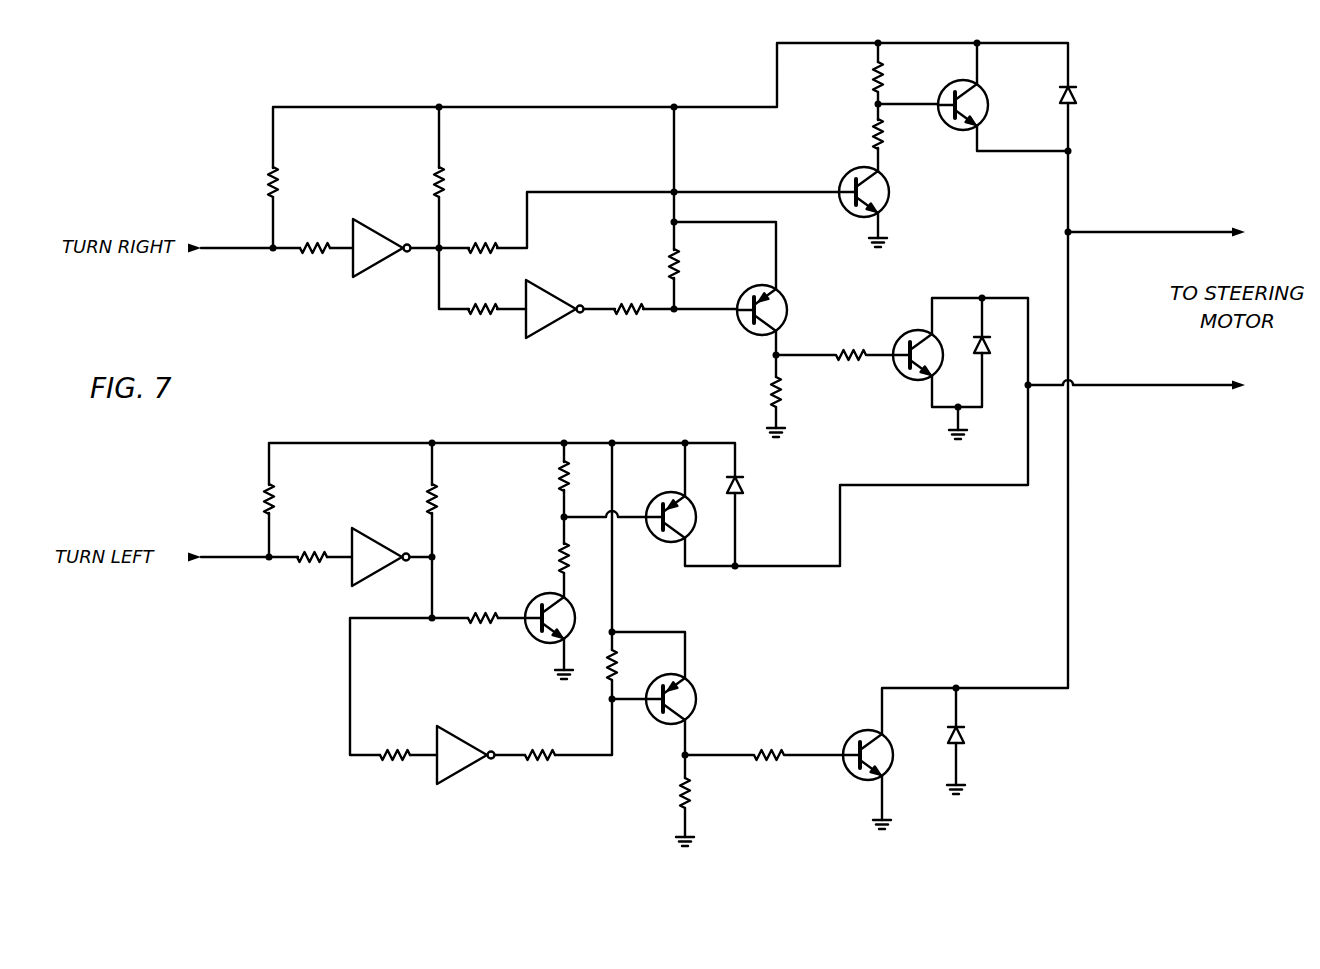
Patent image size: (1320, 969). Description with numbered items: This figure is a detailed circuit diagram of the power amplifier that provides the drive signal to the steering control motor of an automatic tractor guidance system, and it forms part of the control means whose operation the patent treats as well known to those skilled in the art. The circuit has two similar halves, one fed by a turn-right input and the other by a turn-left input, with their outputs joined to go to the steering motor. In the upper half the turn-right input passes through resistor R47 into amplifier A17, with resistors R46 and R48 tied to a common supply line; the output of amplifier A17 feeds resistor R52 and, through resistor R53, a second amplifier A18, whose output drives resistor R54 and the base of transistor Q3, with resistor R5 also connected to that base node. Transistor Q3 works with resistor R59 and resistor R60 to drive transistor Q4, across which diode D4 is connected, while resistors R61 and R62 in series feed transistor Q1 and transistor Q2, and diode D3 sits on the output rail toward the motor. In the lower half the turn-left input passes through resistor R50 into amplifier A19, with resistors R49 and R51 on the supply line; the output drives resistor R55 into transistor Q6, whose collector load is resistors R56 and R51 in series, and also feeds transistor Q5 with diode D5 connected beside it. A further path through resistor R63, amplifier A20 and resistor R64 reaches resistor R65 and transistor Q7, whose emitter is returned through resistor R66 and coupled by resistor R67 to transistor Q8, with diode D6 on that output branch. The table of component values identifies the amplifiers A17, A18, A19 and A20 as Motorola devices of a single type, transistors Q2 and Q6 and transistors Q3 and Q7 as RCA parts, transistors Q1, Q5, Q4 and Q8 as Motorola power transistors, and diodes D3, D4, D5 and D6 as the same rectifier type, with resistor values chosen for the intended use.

The resistor R46 is at (292, 182).
The resistor R47 is at (313, 265).
The amplifier A17 is at (371, 222).
The resistor R48 is at (463, 182).
The resistor R52 is at (484, 234).
The resistor R53 is at (484, 296).
The amplifier A18 is at (553, 292).
The resistor R54 is at (632, 323).
The resistor R5 is at (691, 265).
The transistor Q3 is at (787, 307).
The resistor R59 is at (796, 392).
The resistor R60 is at (853, 342).
The transistor Q4 is at (905, 333).
The diode D4 is at (992, 344).
The resistor R61 is at (858, 77).
The resistor R62 is at (858, 134).
The transistor Q2 is at (845, 174).
The transistor Q1 is at (955, 130).
The diode D3 is at (1077, 95).
The resistor R49 is at (291, 499).
The resistor R50 is at (315, 572).
The amplifier A19 is at (372, 541).
The resistor R51 is at (498, 528).
The resistor R56 is at (543, 476).
The resistor R55 is at (484, 606).
The transistor Q6 is at (527, 635).
The transistor Q5 is at (665, 541).
The diode D5 is at (745, 483).
The resistor R65 is at (632, 664).
The transistor Q7 is at (697, 698).
The resistor R63 is at (394, 770).
The amplifier A20 is at (455, 773).
The resistor R64 is at (538, 770).
The resistor R66 is at (661, 793).
The resistor R67 is at (770, 771).
The transistor Q8 is at (847, 738).
The diode D6 is at (965, 737).